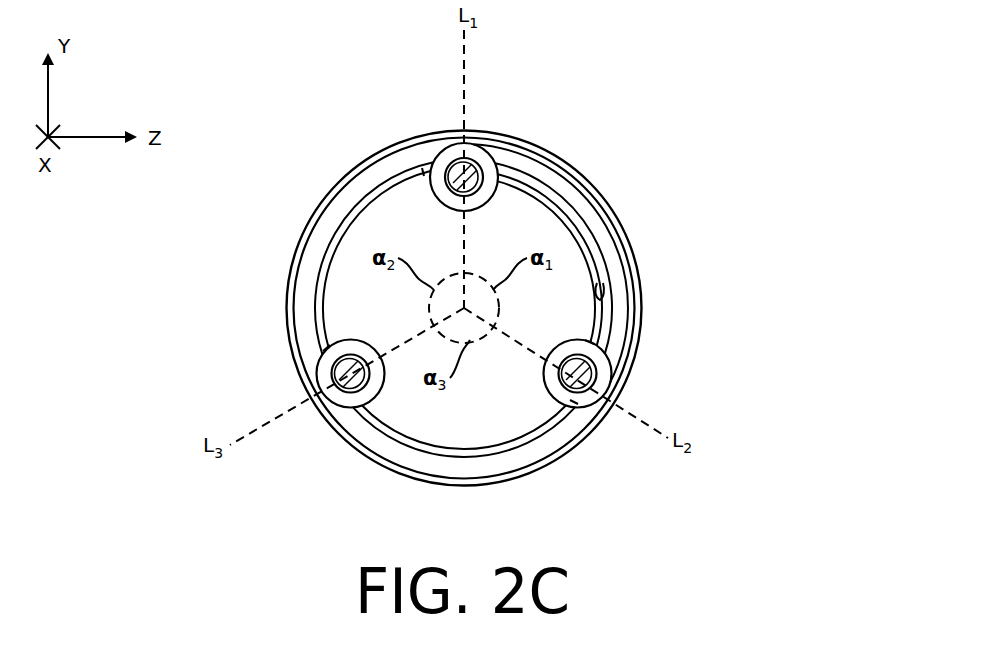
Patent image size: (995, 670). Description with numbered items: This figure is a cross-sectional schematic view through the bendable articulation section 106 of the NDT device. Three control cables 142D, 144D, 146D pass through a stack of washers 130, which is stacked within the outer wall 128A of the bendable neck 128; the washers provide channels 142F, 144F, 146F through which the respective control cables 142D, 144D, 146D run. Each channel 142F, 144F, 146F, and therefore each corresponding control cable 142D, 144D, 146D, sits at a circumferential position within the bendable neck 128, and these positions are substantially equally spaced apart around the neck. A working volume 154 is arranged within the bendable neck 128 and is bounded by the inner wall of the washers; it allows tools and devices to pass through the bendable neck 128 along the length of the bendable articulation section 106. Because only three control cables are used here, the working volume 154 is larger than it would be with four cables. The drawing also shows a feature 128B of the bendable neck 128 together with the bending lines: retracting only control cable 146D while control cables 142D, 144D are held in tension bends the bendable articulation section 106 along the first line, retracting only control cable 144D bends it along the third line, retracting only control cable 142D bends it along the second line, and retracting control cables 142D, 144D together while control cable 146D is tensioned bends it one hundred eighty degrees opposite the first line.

The bendable articulation section 106 is at (770, 216).
The bendable neck 128 is at (630, 253).
The outer wall 128A is at (583, 173).
The notch of ring 128B is at (607, 293).
The stack of washers 130 is at (613, 217).
The working volume 154 is at (336, 268).
The control cable 146D is at (447, 160).
The channel 146F is at (478, 163).
The control cable 144D is at (335, 374).
The channel 144F is at (318, 352).
The control cable 142D is at (597, 366).
The channel 142F is at (570, 406).